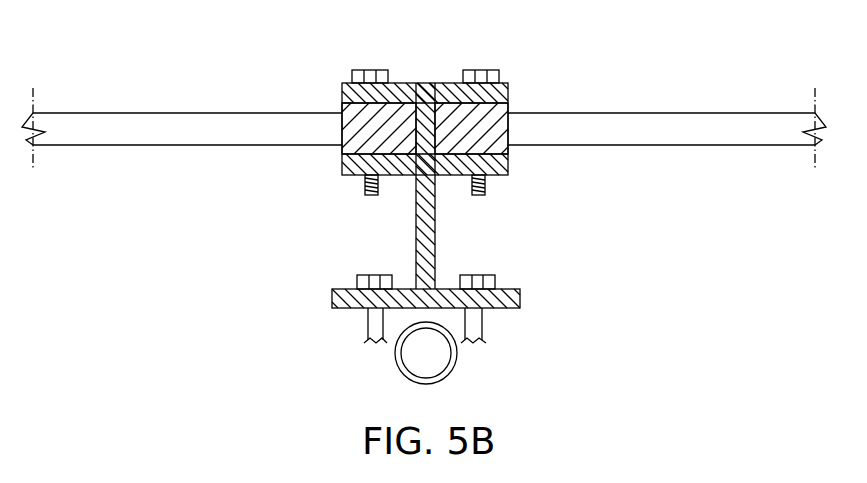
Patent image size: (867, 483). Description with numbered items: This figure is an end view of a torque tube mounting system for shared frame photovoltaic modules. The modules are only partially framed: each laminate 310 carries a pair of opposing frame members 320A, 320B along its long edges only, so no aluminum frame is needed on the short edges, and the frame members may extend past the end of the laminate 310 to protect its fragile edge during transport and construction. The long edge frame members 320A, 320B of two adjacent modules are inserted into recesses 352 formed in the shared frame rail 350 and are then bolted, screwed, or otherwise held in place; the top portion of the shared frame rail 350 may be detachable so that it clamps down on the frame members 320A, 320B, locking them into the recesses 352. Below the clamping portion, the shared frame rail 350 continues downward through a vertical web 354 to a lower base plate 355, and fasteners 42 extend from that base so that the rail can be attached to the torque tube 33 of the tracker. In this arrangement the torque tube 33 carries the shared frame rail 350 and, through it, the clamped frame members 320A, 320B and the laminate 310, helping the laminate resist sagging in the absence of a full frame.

The laminate 310 is at (82, 112).
The recesses 352 is at (424, 123).
The frame member 320B is at (353, 132).
The frame member 320A is at (482, 132).
The shared frame rail 350 is at (424, 203).
The web / vertical member 354 is at (435, 228).
The base plate 355 is at (332, 293).
The fasteners / studs 42 is at (482, 323).
The torque tube 33 is at (455, 362).